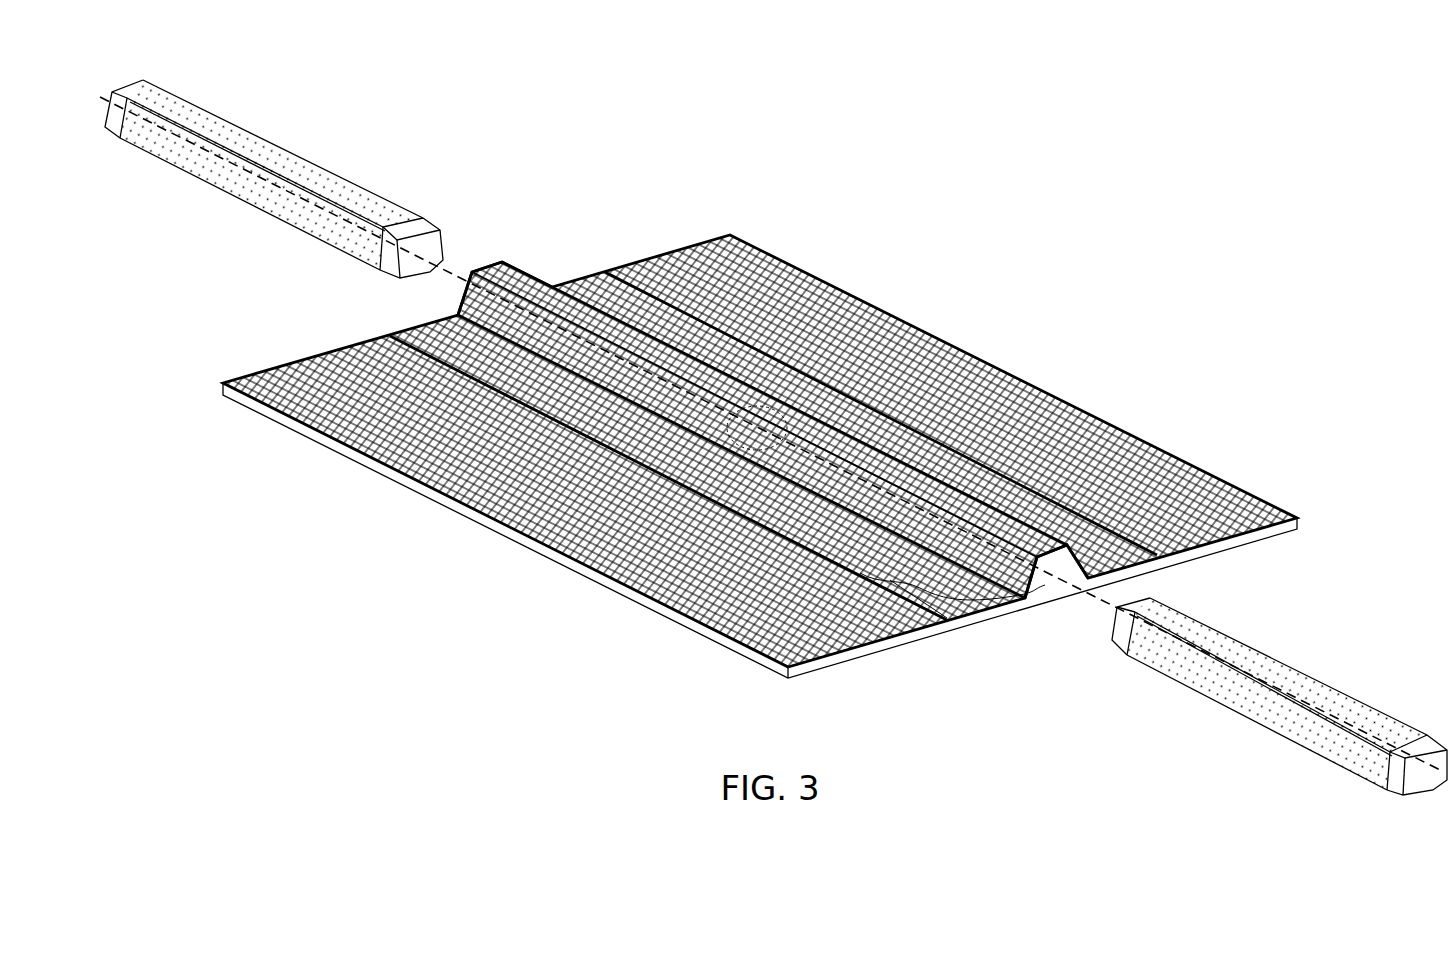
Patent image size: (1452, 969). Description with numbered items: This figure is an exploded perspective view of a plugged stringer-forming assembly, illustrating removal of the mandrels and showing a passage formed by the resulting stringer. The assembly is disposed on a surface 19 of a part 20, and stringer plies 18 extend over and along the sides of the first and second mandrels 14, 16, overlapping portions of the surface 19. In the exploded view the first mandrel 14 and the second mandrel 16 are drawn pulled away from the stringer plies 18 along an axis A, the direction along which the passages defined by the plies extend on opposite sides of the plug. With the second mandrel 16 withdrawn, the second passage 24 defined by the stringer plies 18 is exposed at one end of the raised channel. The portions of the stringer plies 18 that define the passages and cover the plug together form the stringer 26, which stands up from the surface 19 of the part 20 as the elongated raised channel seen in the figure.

The first mandrel 14 is at (290, 143).
The second mandrel 16 is at (1233, 715).
The stringer plies 18 is at (580, 418).
The surface 19 is at (1128, 457).
The part 20 is at (232, 396).
The second passage 24 is at (1095, 576).
The stringer 26 is at (518, 262).
The axis A is at (1450, 790).